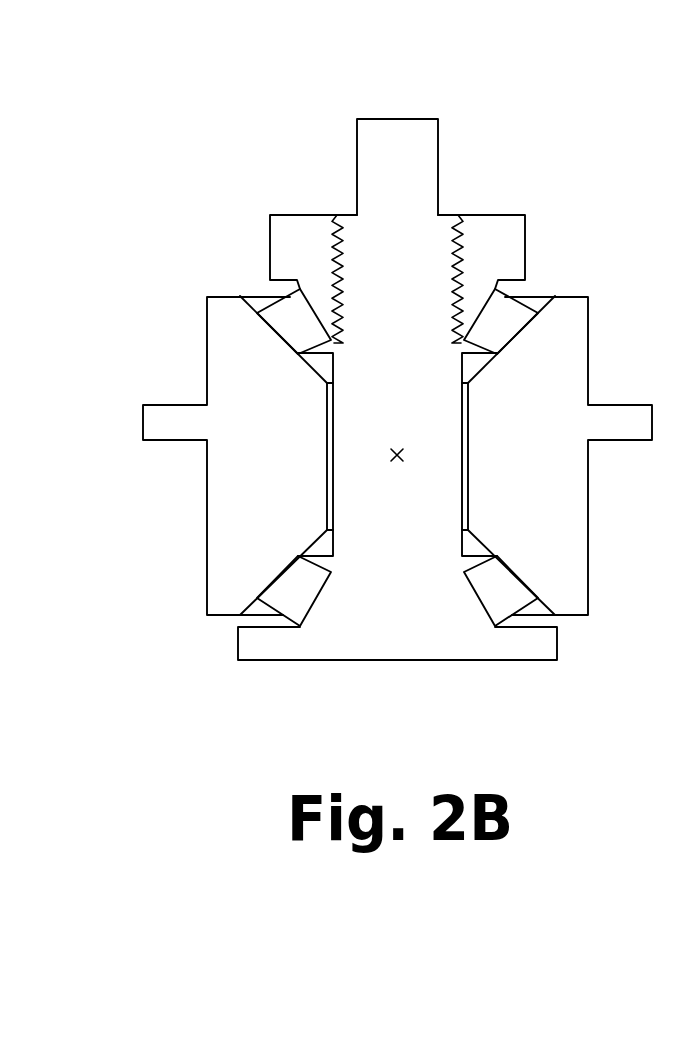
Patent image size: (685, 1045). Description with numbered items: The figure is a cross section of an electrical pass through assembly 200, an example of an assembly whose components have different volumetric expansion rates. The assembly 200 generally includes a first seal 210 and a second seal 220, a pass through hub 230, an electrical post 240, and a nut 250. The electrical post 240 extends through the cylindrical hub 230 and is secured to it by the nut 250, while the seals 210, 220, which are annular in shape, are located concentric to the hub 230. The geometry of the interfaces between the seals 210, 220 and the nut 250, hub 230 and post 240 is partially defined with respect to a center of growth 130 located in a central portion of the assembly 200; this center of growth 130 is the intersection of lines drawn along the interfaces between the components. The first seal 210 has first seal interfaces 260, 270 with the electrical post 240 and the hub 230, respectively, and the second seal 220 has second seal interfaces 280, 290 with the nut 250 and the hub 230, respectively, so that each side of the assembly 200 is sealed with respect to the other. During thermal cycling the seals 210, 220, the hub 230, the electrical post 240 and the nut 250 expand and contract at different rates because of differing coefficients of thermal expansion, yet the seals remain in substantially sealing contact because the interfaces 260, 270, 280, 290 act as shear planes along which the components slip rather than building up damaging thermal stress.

The pass through assembly 200 is at (368, 386).
The center of growth 130 is at (384, 459).
The first seal 210 is at (282, 617).
The second seal 220 is at (283, 296).
The pass through hub 230 is at (515, 457).
The electrical post 240 is at (382, 147).
The nut 250 is at (478, 233).
The first seal interface 260 is at (282, 570).
The first seal interface 270 is at (315, 602).
The second seal interface 280 is at (278, 335).
The second seal interface 290 is at (314, 300).